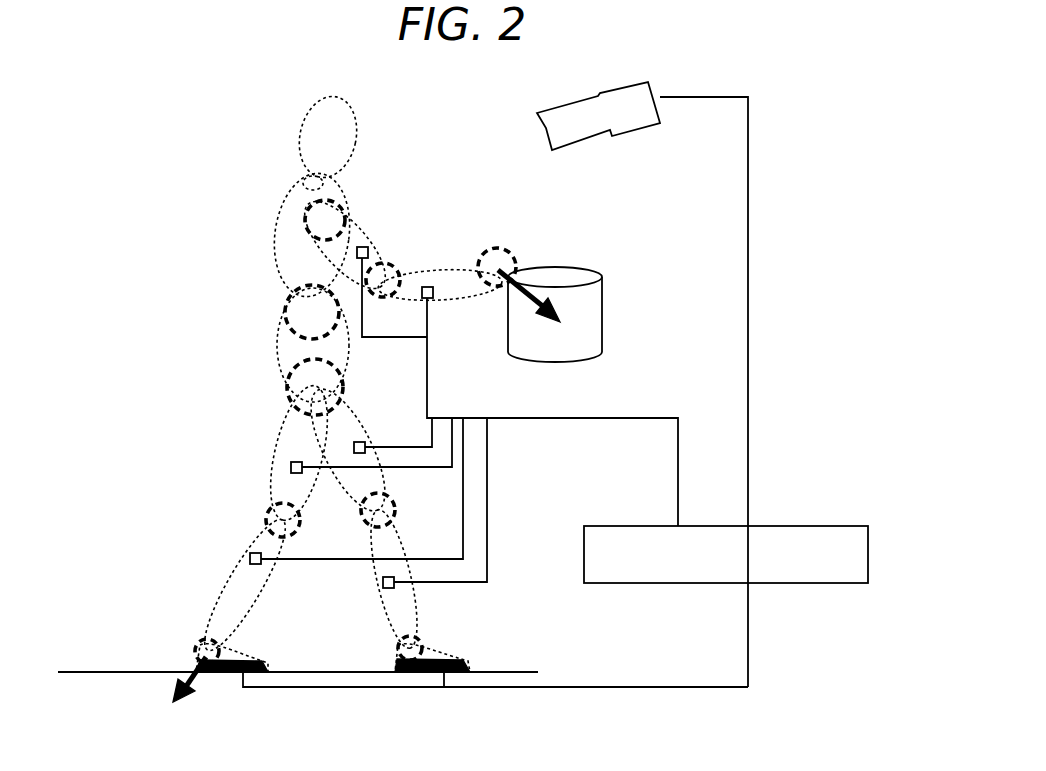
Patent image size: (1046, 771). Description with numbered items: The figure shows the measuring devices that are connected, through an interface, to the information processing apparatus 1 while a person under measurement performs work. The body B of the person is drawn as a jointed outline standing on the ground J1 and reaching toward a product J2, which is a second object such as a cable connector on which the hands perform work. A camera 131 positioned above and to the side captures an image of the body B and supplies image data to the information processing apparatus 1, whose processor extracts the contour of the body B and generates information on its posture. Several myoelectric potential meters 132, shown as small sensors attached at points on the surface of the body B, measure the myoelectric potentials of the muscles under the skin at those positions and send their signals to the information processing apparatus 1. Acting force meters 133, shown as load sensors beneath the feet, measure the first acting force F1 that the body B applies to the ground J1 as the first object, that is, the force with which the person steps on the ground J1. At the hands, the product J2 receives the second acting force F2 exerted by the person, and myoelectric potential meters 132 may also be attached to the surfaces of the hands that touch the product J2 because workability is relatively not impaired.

The information processing apparatus 1 is at (824, 526).
The camera 131 is at (627, 131).
The myoelectric potential meter 132 is at (363, 247).
The acting force meter 133 is at (258, 661).
The body B is at (275, 227).
The ground J1 is at (80, 671).
The product J2 is at (582, 277).
The first acting force F1 is at (188, 672).
The second acting force F2 is at (501, 297).